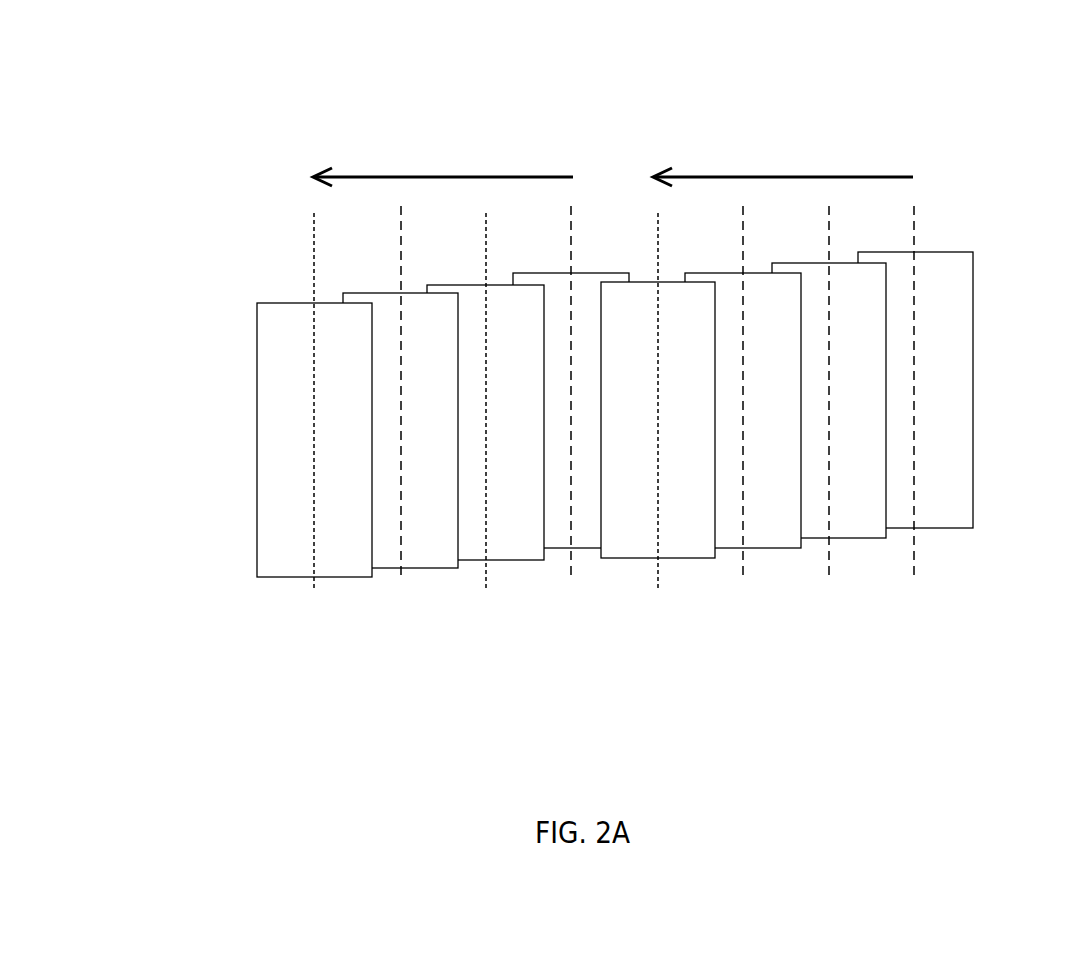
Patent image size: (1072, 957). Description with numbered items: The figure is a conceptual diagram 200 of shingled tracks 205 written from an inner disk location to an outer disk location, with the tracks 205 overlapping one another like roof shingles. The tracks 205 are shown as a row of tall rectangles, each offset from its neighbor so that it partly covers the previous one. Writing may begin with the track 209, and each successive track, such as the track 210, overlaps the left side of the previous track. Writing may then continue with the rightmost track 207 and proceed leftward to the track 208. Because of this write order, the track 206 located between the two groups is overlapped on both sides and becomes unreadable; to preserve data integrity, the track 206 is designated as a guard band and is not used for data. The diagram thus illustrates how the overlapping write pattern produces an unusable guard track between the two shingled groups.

The conceptual diagram 200 is at (98, 102).
The shingled tracks 205 is at (242, 269).
The track 206 is at (633, 609).
The rightmost track 207 is at (933, 574).
The track 208 is at (676, 573).
The track 209 is at (472, 567).
The track 210 is at (381, 581).